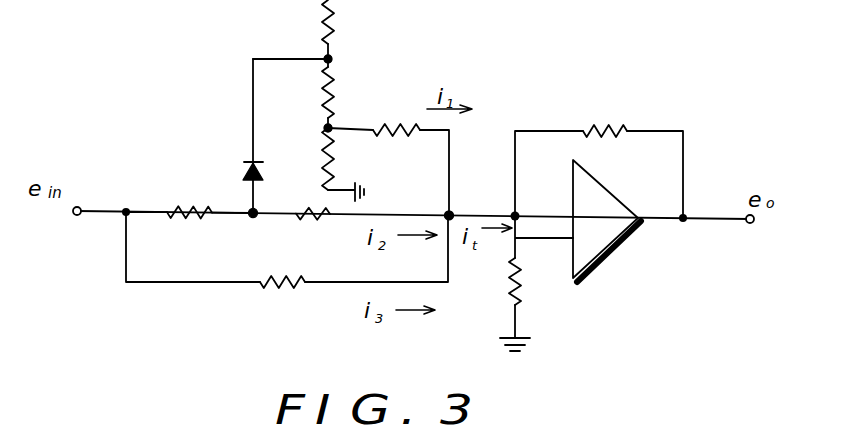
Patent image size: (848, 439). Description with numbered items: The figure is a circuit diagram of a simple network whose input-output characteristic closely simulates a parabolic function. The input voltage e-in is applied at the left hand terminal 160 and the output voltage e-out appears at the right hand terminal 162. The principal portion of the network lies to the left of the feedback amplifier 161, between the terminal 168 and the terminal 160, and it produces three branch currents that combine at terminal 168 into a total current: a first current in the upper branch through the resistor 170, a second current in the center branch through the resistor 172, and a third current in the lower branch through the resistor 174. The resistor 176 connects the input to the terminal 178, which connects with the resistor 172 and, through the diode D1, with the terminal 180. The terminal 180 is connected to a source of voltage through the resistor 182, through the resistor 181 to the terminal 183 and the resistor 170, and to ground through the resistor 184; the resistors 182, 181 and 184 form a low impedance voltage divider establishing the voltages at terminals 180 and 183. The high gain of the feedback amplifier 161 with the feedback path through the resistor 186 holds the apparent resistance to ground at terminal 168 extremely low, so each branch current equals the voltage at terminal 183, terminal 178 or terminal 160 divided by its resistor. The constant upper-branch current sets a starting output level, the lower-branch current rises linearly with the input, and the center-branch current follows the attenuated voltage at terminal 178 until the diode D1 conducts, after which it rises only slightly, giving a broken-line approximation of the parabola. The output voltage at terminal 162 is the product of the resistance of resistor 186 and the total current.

The left hand terminal 160 is at (82, 206).
The resistor 176 is at (194, 203).
The terminal 178 is at (253, 216).
The diode D1 is at (246, 168).
The resistor 182 is at (322, 22).
The terminal 180 is at (332, 57).
The resistor 181 is at (322, 91).
The terminal 183 is at (332, 126).
The resistor 184 is at (333, 152).
The resistor 170 is at (408, 122).
The terminal 168 is at (452, 211).
The resistor 172 is at (302, 222).
The resistor 174 is at (294, 292).
The resistor 186 is at (616, 111).
The feedback amplifier 161 is at (596, 263).
The right hand terminal 162 is at (752, 223).